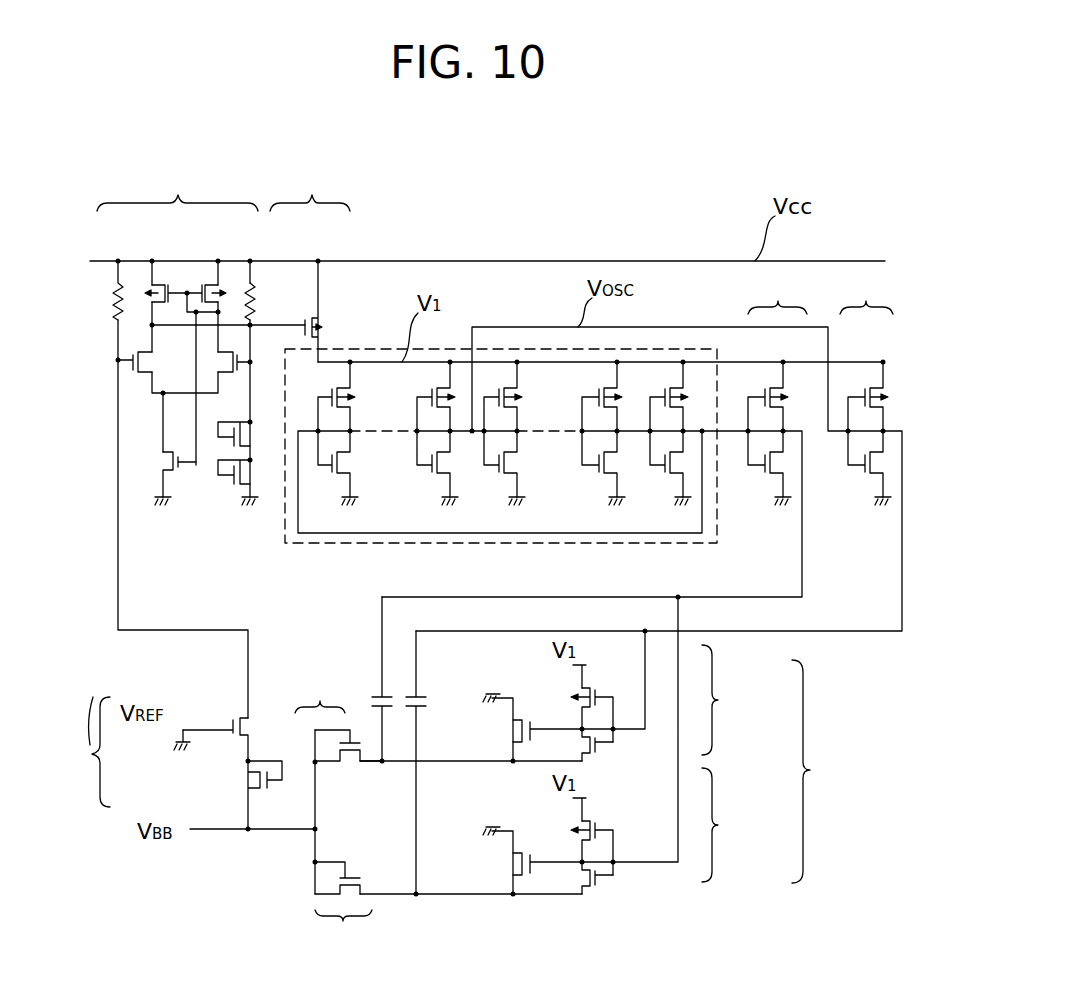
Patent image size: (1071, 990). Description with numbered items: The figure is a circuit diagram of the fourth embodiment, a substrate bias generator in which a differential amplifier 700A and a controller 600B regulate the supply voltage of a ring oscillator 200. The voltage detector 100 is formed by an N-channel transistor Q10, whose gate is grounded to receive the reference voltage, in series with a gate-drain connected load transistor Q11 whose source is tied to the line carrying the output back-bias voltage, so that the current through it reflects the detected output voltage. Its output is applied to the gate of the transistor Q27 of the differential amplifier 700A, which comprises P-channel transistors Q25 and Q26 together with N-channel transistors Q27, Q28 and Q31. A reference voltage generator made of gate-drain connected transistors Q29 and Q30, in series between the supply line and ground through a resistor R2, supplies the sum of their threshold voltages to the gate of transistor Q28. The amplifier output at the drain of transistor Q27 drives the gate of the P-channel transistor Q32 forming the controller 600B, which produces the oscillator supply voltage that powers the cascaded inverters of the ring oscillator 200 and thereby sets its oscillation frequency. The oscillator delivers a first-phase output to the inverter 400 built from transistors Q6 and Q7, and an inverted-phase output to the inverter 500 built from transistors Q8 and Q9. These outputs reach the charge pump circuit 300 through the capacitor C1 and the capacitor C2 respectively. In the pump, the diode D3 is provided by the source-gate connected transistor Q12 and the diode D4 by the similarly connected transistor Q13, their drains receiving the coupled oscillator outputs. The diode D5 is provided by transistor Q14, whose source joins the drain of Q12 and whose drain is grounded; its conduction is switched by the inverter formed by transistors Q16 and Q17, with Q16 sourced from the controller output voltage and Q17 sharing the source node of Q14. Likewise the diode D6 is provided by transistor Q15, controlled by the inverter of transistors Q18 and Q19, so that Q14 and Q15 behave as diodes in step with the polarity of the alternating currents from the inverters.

The voltage detector 100 is at (86, 739).
The ring oscillator 200 is at (456, 546).
The charge pump circuit 300 is at (826, 771).
The inverter 400 is at (777, 294).
The inverter 500 is at (866, 294).
The controller 600B is at (313, 185).
The differential amplifier 700A is at (177, 185).
The resistor R2 is at (112, 304).
The P-channel MOS transistor Q6 is at (765, 383).
The N-channel MOS transistor Q7 is at (770, 477).
The P-channel MOS transistor Q8 is at (887, 394).
The N-channel MOS transistor Q9 is at (870, 477).
The N-channel MOS transistor Q10 is at (236, 718).
The N-channel MOS transistor Q11 is at (248, 777).
The N-channel MOS transistor Q12 is at (345, 764).
The N-channel MOS transistor Q13 is at (362, 876).
The N-channel MOS transistor Q14 is at (513, 732).
The N-channel MOS transistor Q15 is at (513, 863).
The P-channel MOS transistor Q16 is at (599, 693).
The N-channel MOS transistor Q17 is at (600, 757).
The P-channel MOS transistor Q18 is at (605, 827).
The N-channel MOS transistor Q19 is at (600, 893).
The P-channel MOS transistor Q25 is at (165, 280).
The P-channel MOS transistor Q26 is at (212, 280).
The N-channel MOS transistor Q27 is at (120, 373).
The N-channel MOS transistor Q28 is at (240, 350).
The N-channel MOS transistor Q29 is at (256, 430).
The N-channel MOS transistor Q30 is at (257, 478).
The N-channel MOS transistor Q31 is at (179, 478).
The P-channel MOS transistor Q32 is at (330, 325).
The capacitor C1 is at (380, 691).
The capacitor C2 is at (418, 696).
The diode D3 is at (320, 694).
The diode D4 is at (343, 935).
The diode D5 is at (731, 700).
The diode D6 is at (730, 825).